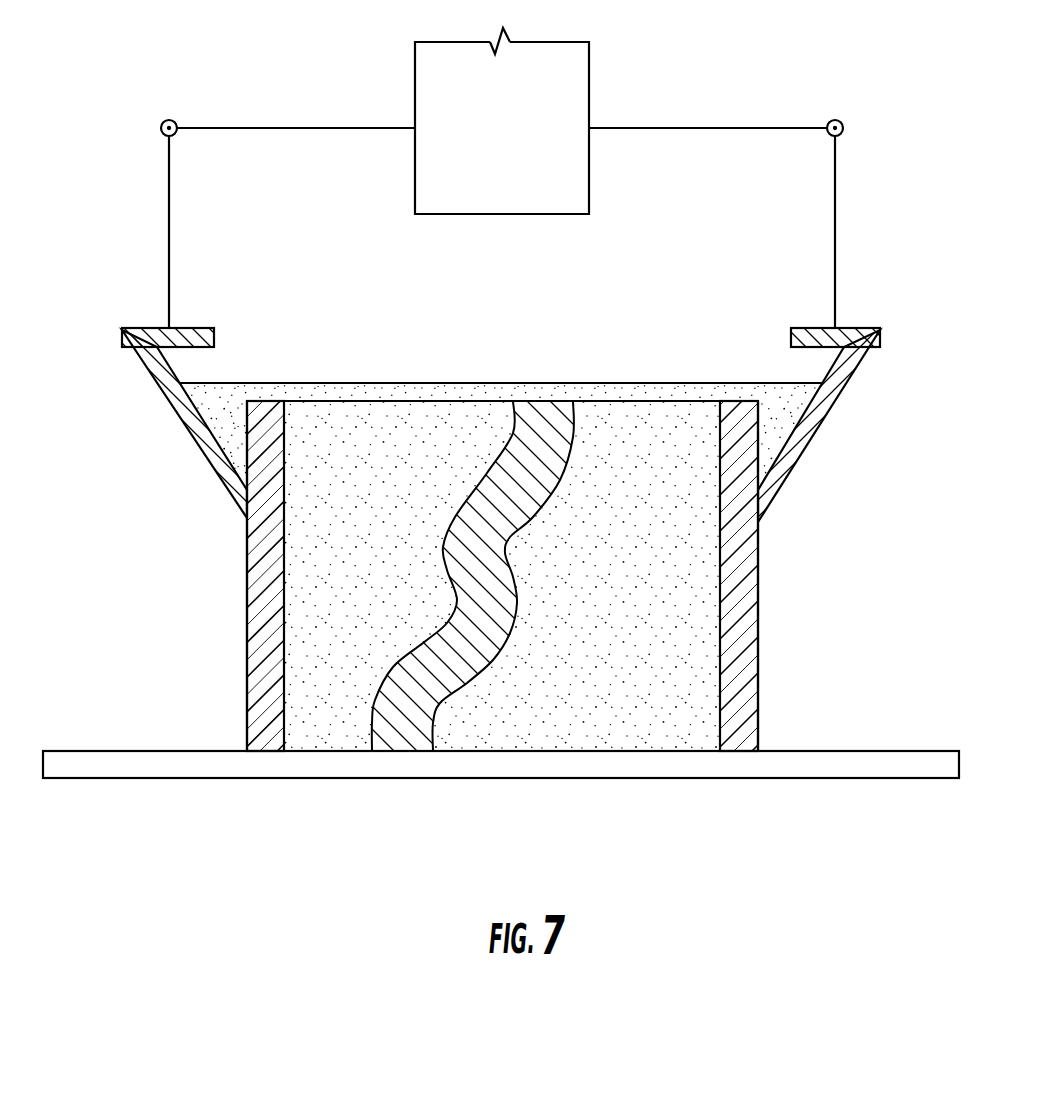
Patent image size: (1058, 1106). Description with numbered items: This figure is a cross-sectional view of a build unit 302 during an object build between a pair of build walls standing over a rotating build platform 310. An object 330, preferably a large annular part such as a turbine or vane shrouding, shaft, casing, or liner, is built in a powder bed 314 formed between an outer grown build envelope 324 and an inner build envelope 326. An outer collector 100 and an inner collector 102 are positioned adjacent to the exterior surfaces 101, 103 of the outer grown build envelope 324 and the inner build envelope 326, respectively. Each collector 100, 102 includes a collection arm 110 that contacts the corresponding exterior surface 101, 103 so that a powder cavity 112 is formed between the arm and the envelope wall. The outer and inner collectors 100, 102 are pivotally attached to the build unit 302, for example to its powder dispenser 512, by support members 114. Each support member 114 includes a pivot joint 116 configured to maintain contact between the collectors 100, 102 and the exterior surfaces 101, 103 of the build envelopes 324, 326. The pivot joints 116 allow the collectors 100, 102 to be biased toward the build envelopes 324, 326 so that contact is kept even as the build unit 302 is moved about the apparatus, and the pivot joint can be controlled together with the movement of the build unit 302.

The build unit 302 is at (350, 68).
The powder dispenser 512 is at (589, 182).
The support members 114 is at (169, 195).
The pivot joint 116 is at (163, 121).
The outer collector 100 is at (126, 340).
The inner collector 102 is at (880, 335).
The collection arm 110 is at (197, 442).
The powder cavity 112 is at (221, 404).
The powder bed 314 is at (601, 700).
The object 330 is at (403, 733).
The outer grown build envelope 324 is at (256, 620).
The inner build envelope 326 is at (735, 612).
The exterior surface of the outer grown build envelope 101 is at (243, 720).
The exterior surface of the inner build envelope 103 is at (763, 697).
The build platform 310 is at (848, 778).